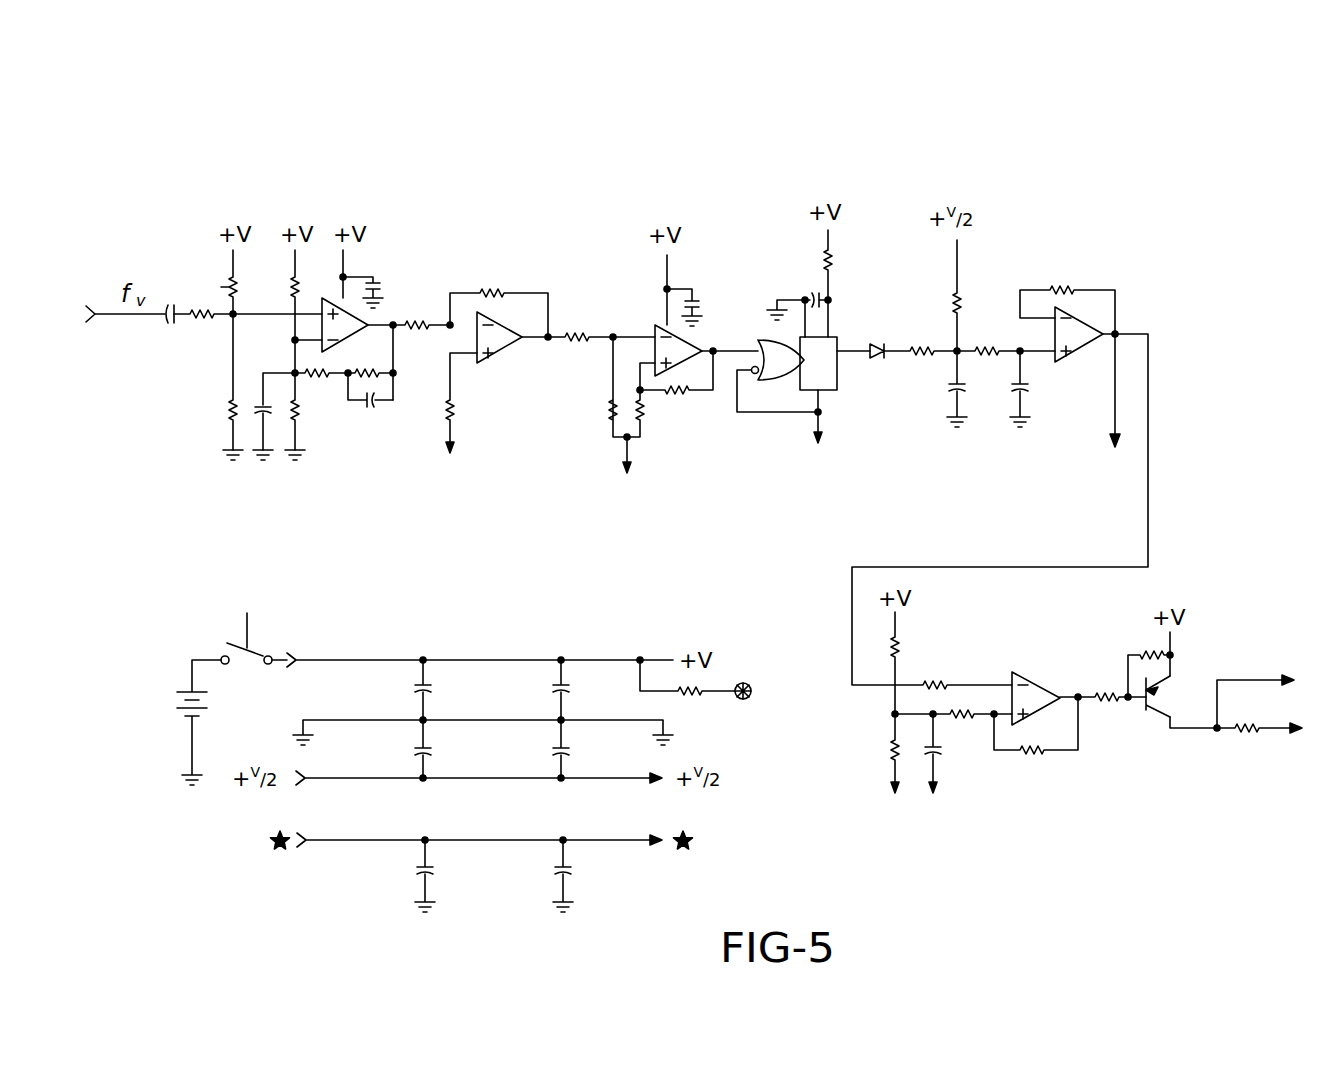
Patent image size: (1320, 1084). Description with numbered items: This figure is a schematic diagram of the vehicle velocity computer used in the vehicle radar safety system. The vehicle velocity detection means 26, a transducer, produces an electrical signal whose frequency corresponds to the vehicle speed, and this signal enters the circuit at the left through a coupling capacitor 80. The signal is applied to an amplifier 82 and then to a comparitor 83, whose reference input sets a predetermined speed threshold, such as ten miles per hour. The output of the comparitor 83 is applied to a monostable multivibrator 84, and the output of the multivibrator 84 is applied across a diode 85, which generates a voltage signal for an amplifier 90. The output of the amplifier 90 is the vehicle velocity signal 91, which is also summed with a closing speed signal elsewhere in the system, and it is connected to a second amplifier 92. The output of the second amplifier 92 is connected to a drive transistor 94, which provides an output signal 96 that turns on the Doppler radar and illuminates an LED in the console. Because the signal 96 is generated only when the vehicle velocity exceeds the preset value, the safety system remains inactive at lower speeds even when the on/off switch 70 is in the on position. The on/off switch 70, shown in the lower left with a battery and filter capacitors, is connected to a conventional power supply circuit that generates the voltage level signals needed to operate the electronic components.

The vehicle velocity detection means 26 is at (96, 308).
The on/off switch 70 is at (243, 585).
The coupling capacitor 80 is at (169, 300).
The amplifier 82 is at (322, 297).
The comparitor 83 is at (452, 295).
The monostable multivibrator 84 is at (800, 338).
The diode 85 is at (872, 344).
The amplifier 90 is at (1082, 348).
The vehicle velocity signal 91 is at (1115, 418).
The second amplifier 92 is at (1032, 682).
The drive transistor 94 is at (1147, 713).
The output signal 96 is at (1236, 680).